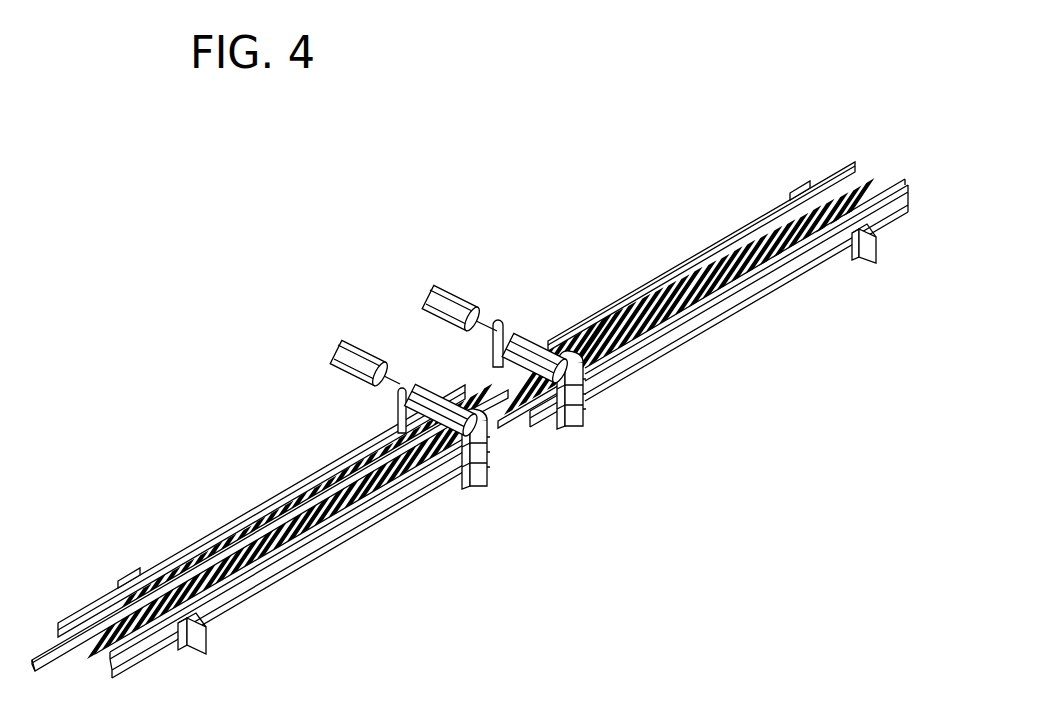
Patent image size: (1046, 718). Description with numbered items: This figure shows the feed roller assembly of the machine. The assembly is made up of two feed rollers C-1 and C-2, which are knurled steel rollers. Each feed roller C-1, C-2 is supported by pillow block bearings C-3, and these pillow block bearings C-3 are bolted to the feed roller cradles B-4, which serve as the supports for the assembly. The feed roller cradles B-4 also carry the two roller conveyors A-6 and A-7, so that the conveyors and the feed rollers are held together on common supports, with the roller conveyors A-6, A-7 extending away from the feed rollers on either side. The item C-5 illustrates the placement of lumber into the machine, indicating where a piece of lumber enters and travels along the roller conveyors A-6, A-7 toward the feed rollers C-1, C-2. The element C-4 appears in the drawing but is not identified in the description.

The roller conveyor A-6 is at (317, 527).
The roller conveyor A-7 is at (707, 287).
The feed roller cradle B-4 is at (885, 272).
The feed roller C-1 is at (440, 407).
The feed roller C-2 is at (533, 347).
The pillow block bearing C-3 is at (478, 414).
The detachable rollers C-4 is at (445, 300).
The placement of lumber C-5 is at (268, 507).